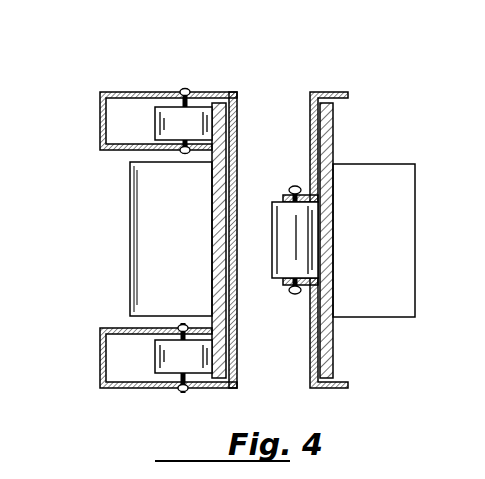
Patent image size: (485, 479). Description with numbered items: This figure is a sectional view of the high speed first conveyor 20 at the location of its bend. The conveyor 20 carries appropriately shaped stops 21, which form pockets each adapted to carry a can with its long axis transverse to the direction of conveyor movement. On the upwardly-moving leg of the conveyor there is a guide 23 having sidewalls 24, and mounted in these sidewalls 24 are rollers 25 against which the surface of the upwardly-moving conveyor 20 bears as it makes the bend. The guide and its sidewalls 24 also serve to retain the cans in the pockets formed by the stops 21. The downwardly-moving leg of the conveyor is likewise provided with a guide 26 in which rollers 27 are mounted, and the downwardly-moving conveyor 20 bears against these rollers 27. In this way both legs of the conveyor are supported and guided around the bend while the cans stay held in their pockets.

The first conveyor 20 is at (229, 121).
The stops 21 is at (133, 236).
The guide 23 is at (232, 326).
The sidewalls 24 is at (100, 118).
The rollers 25 is at (168, 112).
The guide 26 is at (309, 136).
The rollers 27 is at (277, 206).